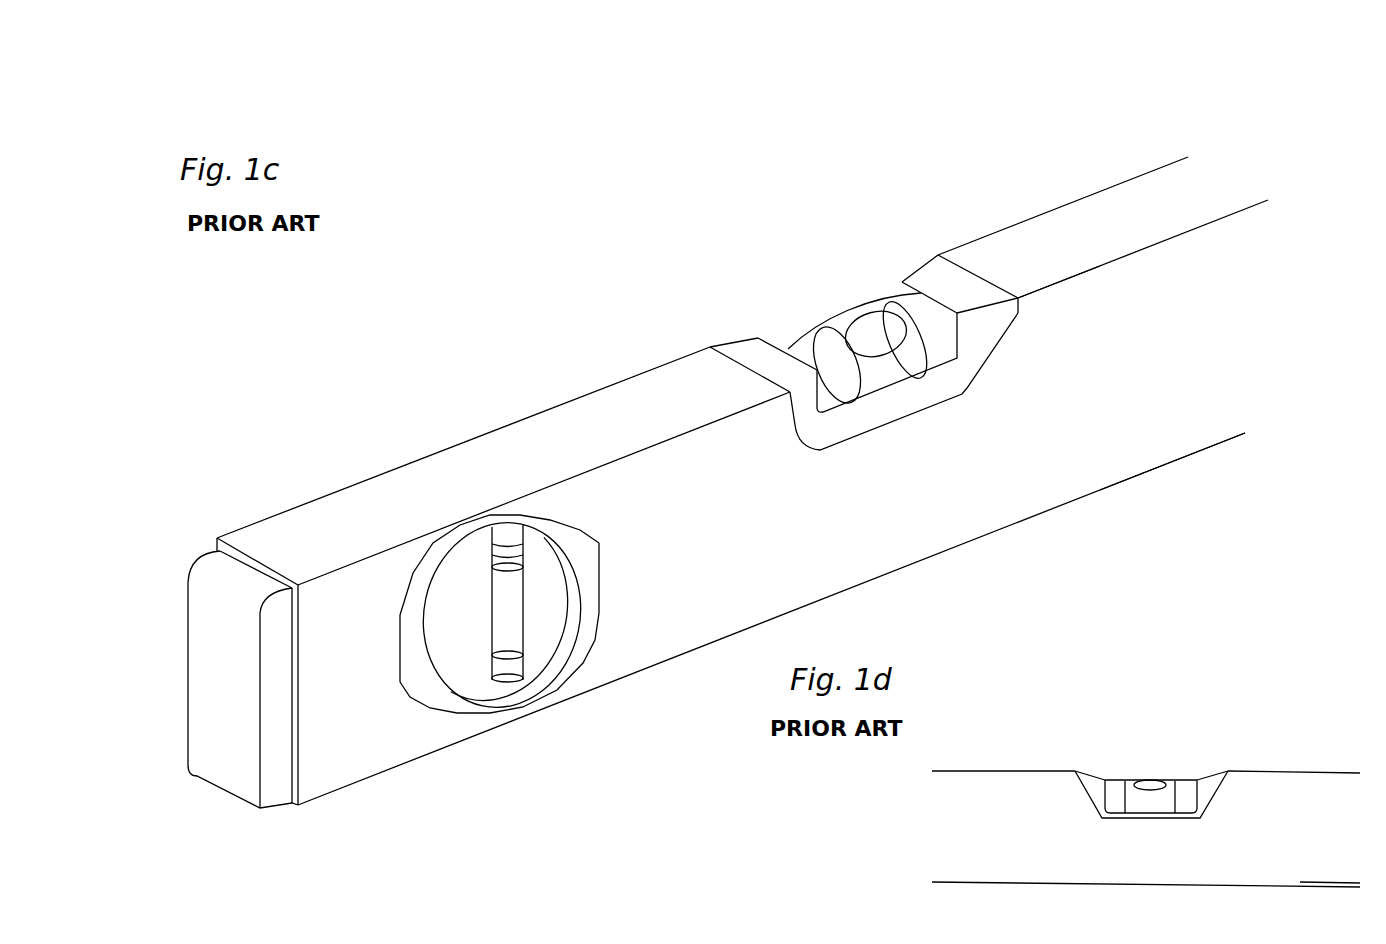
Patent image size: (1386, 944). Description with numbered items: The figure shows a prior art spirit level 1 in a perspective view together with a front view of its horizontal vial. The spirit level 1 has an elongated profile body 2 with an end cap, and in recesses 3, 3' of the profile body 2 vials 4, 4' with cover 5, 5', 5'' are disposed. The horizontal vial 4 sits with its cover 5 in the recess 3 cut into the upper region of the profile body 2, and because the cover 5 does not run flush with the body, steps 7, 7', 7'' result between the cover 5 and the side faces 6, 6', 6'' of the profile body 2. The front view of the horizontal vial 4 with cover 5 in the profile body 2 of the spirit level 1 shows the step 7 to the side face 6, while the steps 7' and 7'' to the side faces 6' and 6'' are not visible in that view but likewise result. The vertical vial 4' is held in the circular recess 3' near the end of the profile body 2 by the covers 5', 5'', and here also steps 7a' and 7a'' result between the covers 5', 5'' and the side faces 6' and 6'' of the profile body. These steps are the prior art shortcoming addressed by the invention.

In FIG. 1C, the spirit level 1 is at (418, 363).
In FIG. 1C, the profile body 2 is at (565, 425).
In FIG. 1D, the profile body 2 is at (1008, 805).
In FIG. 1C, the recess 3 is at (864, 316).
In FIG. 1D, the recess 3 is at (1139, 719).
In FIG. 1C, the horizontal vial 4 is at (862, 310).
In FIG. 1D, the horizontal vial 4 is at (1116, 815).
In FIG. 1C, the cover 5 is at (861, 326).
In FIG. 1D, the cover 5 is at (1157, 813).
In FIG. 1C, the side face 6 is at (1103, 224).
In FIG. 1D, the side face 6 is at (1294, 738).
In FIG. 1C, the step 7 is at (960, 255).
In FIG. 1D, the step 7 is at (1151, 727).
In FIG. 1C, the side face 6' is at (1172, 425).
In FIG. 1D, the side face 6' is at (1315, 849).
In FIG. 1C, the side face 6'' is at (1017, 205).
In FIG. 1C, the step 7' is at (904, 406).
In FIG. 1C, the step 7'' is at (763, 298).
In FIG. 1C, the recess 3' is at (449, 534).
In FIG. 1C, the vertical vial 4' is at (436, 603).
In FIG. 1C, the cover 5' is at (526, 603).
In FIG. 1C, the cover 5'' is at (410, 488).
In FIG. 1C, the step 7a' is at (638, 578).
In FIG. 1C, the step 7a'' is at (339, 514).